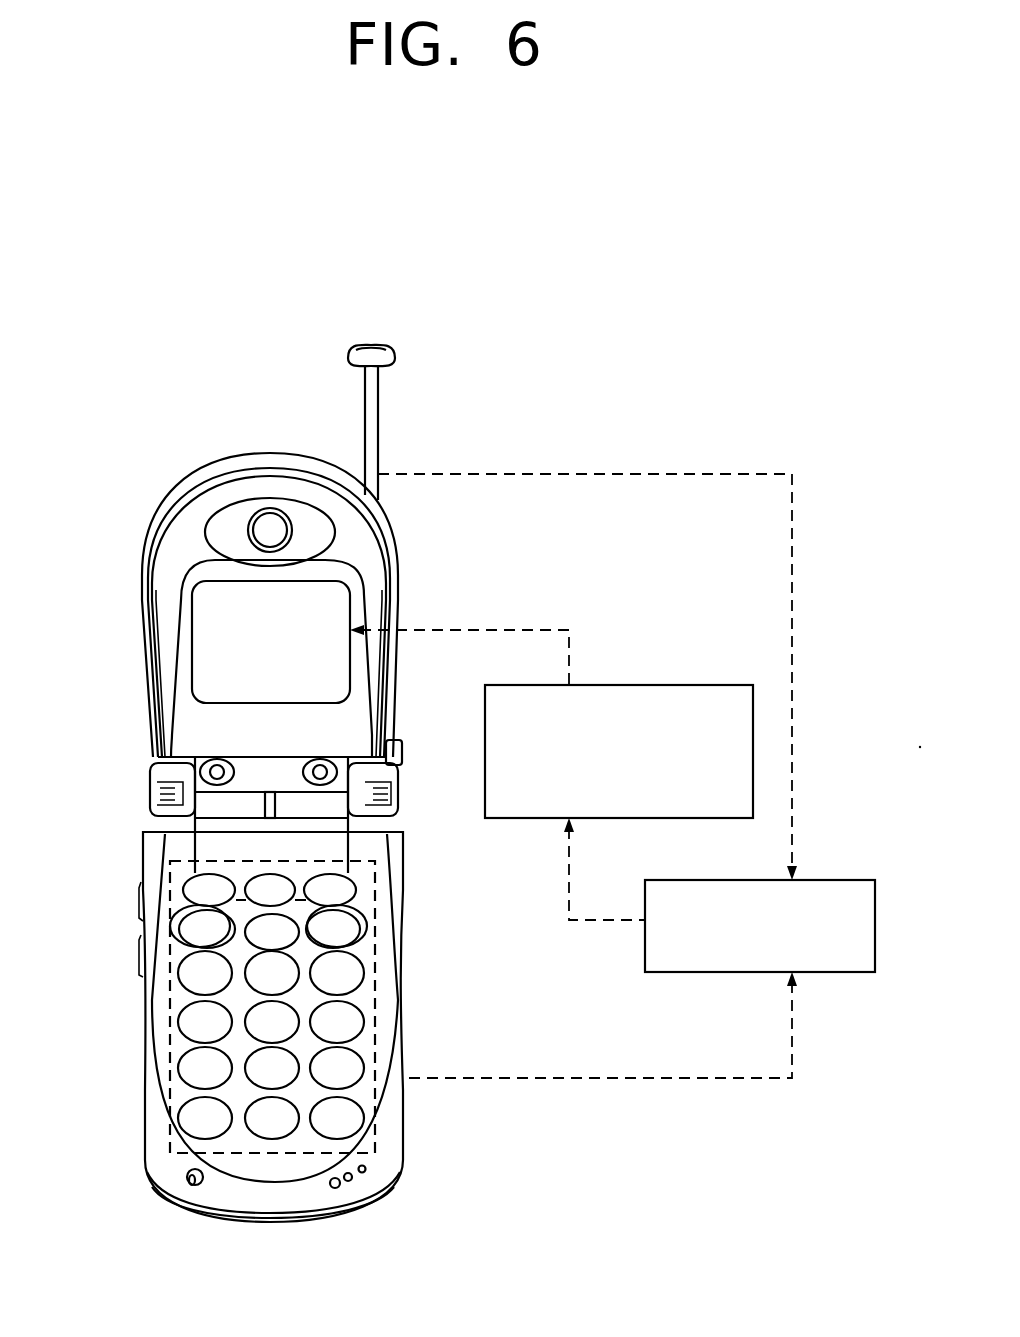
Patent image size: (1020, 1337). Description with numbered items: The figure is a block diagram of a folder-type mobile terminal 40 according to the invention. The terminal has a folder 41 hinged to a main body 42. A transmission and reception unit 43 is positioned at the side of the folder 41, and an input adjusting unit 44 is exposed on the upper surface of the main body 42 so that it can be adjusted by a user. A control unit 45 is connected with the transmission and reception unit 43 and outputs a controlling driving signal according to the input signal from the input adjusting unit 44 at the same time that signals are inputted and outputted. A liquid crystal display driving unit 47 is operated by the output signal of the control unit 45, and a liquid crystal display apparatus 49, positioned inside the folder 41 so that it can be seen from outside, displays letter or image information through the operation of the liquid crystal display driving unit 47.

The mobile terminal 40 is at (124, 521).
The folder 41 is at (178, 491).
The main body 42 is at (140, 1046).
The transmission and reception unit 43 is at (372, 422).
The input adjusting unit 44 is at (375, 1097).
The control unit 45 is at (820, 880).
The liquid crystal display driving unit 47 is at (627, 685).
The liquid crystal display apparatus 49 is at (200, 610).